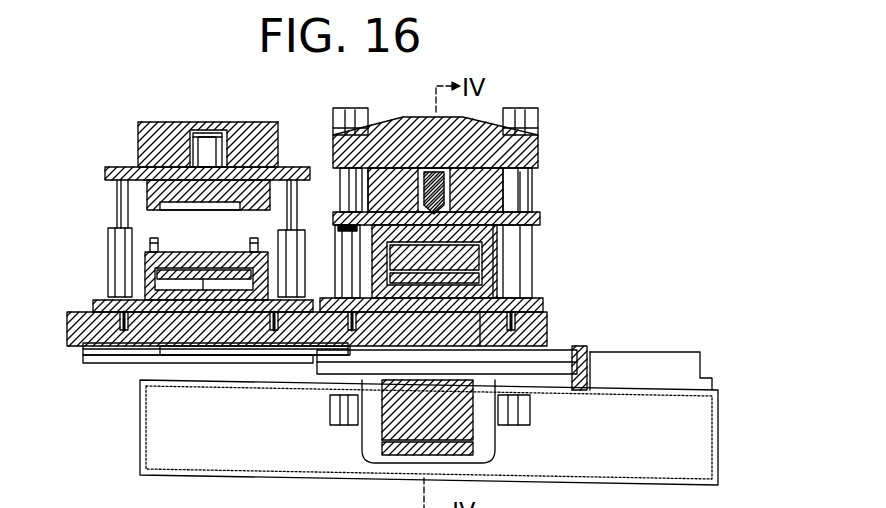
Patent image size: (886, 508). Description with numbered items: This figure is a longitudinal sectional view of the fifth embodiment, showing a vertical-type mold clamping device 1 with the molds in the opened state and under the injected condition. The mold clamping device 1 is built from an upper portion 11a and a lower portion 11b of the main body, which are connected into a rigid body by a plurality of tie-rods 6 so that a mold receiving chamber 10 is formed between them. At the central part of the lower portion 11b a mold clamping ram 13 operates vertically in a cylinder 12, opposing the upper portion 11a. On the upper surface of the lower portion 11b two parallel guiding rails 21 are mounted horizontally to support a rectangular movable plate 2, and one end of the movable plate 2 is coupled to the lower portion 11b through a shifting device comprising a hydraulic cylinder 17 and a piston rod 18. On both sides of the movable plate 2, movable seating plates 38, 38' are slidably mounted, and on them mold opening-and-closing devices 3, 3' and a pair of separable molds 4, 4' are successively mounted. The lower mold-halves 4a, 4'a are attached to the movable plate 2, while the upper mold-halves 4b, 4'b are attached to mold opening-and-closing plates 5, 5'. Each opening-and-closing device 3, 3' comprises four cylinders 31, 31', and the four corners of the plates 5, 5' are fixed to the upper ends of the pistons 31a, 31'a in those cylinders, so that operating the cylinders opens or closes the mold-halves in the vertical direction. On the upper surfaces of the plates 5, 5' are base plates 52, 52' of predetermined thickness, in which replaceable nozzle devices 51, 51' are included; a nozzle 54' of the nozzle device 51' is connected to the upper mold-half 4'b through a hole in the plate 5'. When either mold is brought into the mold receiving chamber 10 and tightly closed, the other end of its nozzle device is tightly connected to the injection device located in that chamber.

The mold clamping device 1 is at (402, 118).
The movable plate 2 is at (550, 330).
The mold opening-and-closing device 3 is at (195, 146).
The mold opening-and-closing device 3' is at (464, 208).
The separable mold 4 is at (168, 226).
The separable mold 4' is at (476, 258).
The lower mold-half 4a is at (145, 281).
The lower mold-half 4'a is at (511, 265).
The upper mold-half 4b is at (238, 205).
The upper mold-half 4'b is at (332, 190).
The mold opening-and-closing plate 5 is at (288, 165).
The mold opening-and-closing plate 5' is at (545, 176).
The tie-rod 6 is at (345, 180).
The mold receiving chamber 10 is at (505, 263).
The upper portion 11a is at (483, 138).
The lower portion 11b is at (330, 398).
The cylinder 12 is at (380, 455).
The mold clamping ram 13 is at (412, 420).
The hydraulic cylinder 17 is at (540, 378).
The piston rod 18 is at (197, 368).
The guiding rail 21 is at (640, 358).
The cylinder 31 is at (99, 262).
The cylinder 31' is at (310, 263).
The piston 31a is at (115, 200).
The piston 31'a is at (328, 252).
The movable seating plate 38 is at (215, 354).
The movable seating plate 38' is at (466, 295).
The nozzle device 51 is at (216, 122).
The nozzle device 51' is at (424, 150).
The base plate 52 is at (208, 122).
The base plate 52' is at (421, 141).
The nozzle 54' is at (329, 152).